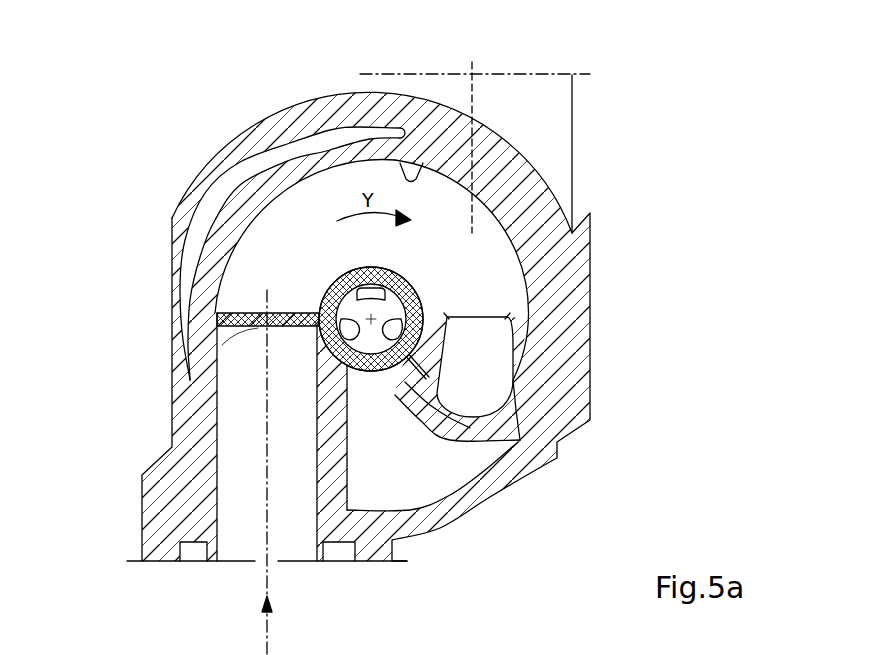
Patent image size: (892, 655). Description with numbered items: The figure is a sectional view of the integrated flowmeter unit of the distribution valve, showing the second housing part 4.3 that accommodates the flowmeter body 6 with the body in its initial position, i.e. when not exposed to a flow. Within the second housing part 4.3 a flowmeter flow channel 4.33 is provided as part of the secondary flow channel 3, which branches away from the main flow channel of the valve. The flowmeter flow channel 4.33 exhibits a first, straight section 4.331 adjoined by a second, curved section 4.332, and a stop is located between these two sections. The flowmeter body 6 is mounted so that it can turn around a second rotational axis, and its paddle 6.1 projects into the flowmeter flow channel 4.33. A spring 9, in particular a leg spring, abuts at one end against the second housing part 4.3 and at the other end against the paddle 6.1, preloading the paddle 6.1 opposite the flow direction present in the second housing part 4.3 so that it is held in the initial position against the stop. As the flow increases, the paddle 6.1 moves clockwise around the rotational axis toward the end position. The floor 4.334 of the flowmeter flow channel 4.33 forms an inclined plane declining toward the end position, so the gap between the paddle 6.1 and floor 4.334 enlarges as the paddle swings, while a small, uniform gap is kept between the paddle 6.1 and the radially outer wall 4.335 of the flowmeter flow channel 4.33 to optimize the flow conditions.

The second housing part 4.3 is at (307, 107).
The flowmeter flow channel 4.33 is at (222, 448).
The first, straight section 4.331 is at (236, 487).
The second, curved section 4.332 is at (278, 222).
The floor 4.334 is at (240, 283).
The radially outer wall 4.335 is at (423, 160).
The flowmeter body 6 is at (412, 282).
The paddle 6.1 is at (238, 346).
The spring 9 is at (430, 367).
The secondary flow channel 3 is at (241, 543).